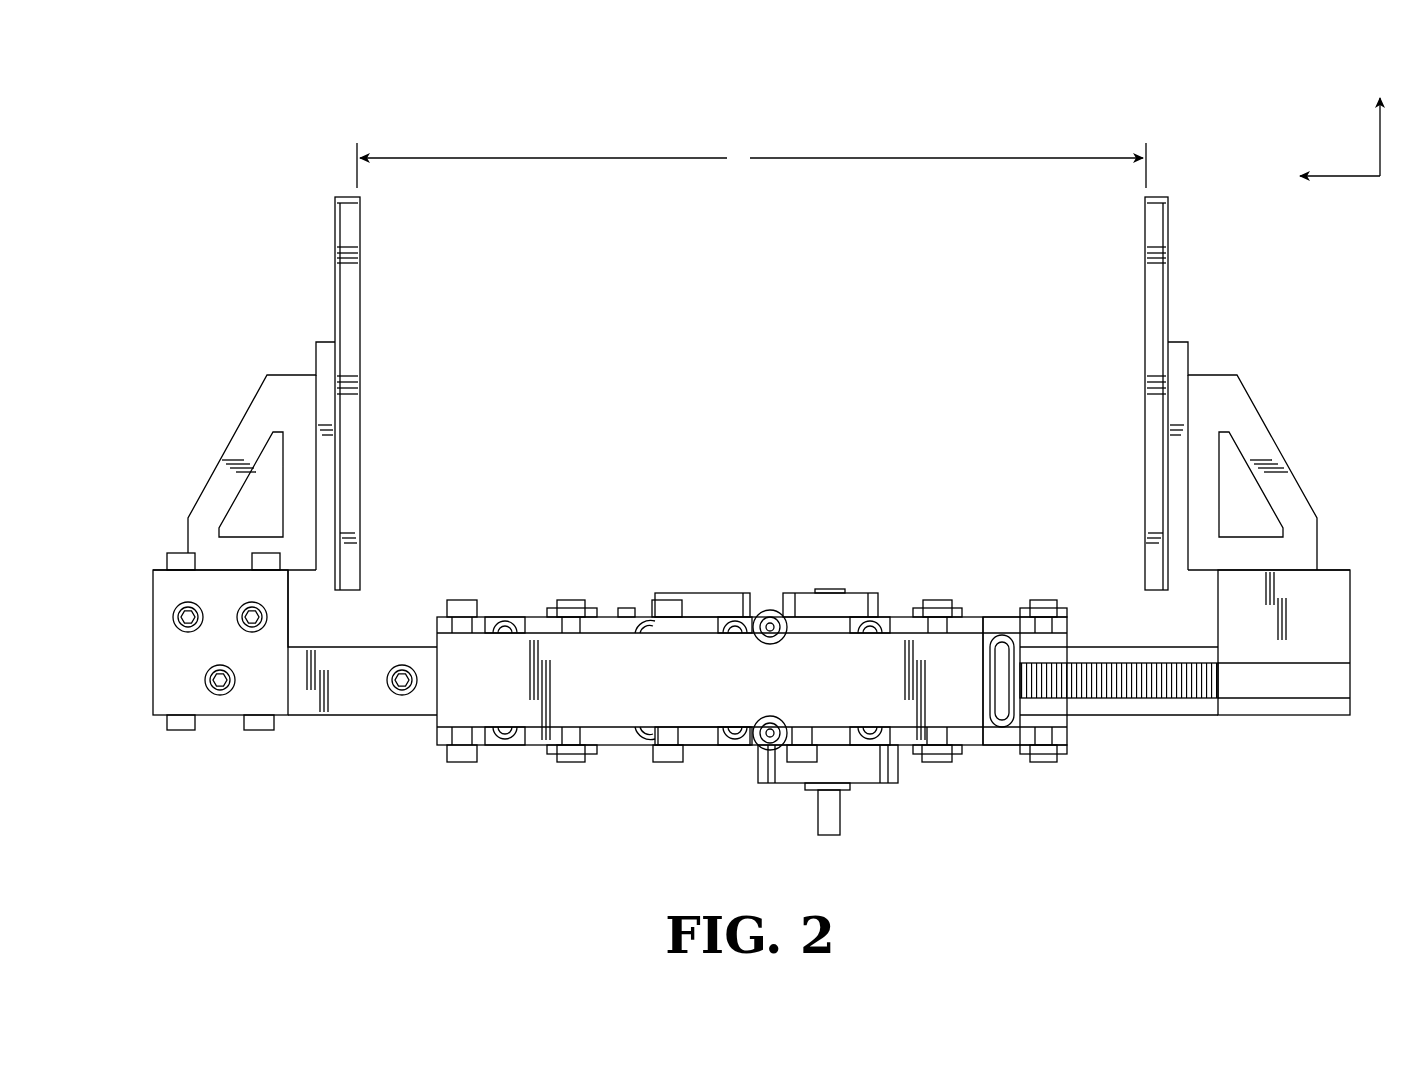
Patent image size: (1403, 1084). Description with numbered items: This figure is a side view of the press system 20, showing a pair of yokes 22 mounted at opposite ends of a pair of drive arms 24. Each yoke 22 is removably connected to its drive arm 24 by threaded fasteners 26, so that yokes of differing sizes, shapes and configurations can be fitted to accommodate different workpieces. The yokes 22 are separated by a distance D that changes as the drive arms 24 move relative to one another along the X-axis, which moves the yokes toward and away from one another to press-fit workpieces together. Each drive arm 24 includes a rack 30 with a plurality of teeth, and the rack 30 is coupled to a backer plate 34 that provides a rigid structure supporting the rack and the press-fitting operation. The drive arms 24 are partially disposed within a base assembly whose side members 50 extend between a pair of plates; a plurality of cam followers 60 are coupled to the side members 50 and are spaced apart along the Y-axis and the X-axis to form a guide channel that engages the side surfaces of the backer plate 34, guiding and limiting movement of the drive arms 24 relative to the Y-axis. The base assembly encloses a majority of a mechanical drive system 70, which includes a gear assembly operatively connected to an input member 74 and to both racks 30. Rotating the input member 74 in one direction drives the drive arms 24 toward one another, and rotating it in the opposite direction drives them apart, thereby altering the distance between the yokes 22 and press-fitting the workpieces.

The press system 20 is at (950, 92).
The yoke 22 is at (335, 312).
The drive arm 24 is at (372, 748).
The threaded fastener 26 is at (178, 553).
The rack 30 is at (1118, 690).
The backer plate 34 is at (1115, 653).
The side member 50 is at (528, 645).
The cam follower 60 is at (765, 624).
The drive system 70 is at (860, 806).
The input member 74 is at (826, 808).